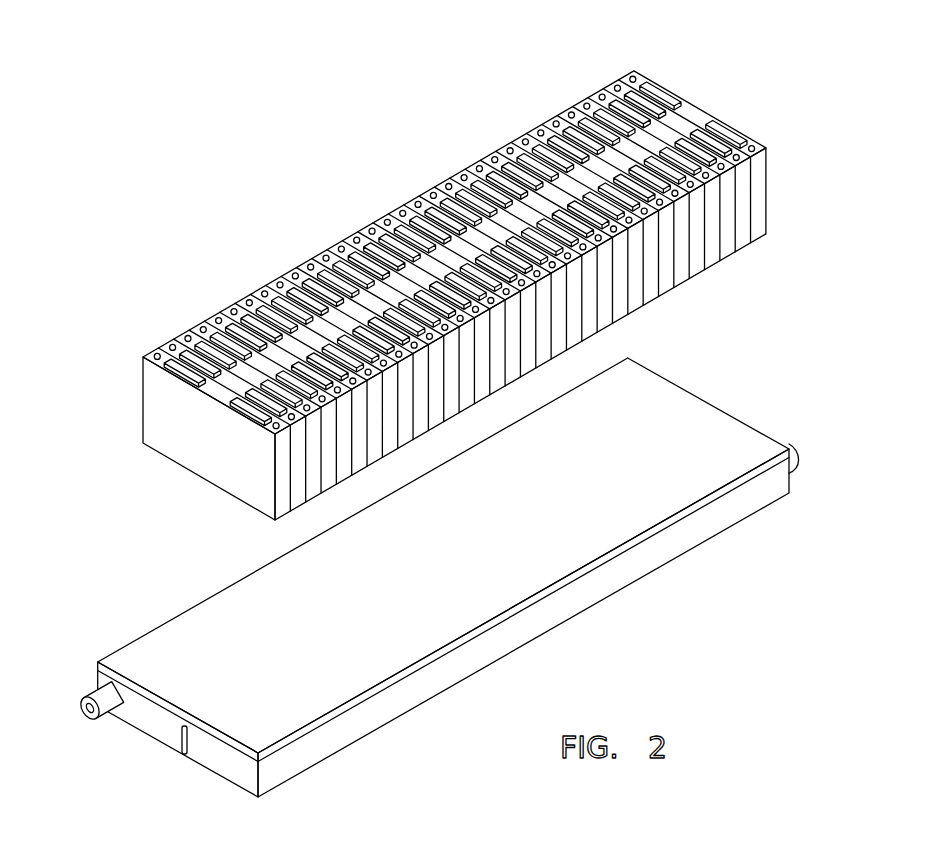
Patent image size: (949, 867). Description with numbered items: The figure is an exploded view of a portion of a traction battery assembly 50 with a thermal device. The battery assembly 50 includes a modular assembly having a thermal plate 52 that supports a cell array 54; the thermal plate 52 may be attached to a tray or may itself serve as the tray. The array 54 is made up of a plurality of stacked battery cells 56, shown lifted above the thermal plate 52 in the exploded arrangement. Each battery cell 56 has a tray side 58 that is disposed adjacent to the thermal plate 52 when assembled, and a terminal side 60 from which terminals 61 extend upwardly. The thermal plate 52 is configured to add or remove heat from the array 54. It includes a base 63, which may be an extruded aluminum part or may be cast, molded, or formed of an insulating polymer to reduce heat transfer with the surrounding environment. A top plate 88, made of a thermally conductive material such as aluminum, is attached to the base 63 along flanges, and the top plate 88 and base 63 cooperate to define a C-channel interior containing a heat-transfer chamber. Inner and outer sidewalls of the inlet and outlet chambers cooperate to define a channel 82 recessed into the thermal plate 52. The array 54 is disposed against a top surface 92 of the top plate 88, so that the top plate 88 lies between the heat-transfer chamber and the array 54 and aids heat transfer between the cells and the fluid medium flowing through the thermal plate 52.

The traction battery assembly 50 is at (928, 93).
The thermal plate 52 is at (767, 378).
The cell array 54 is at (819, 158).
The battery cell 56 is at (170, 342).
The tray side 58 is at (165, 457).
The terminal side 60 is at (202, 323).
The terminals 61 is at (237, 302).
The base 63 is at (372, 717).
The channel 82 is at (183, 735).
The top plate 88 is at (170, 637).
The top surface 92 is at (323, 651).